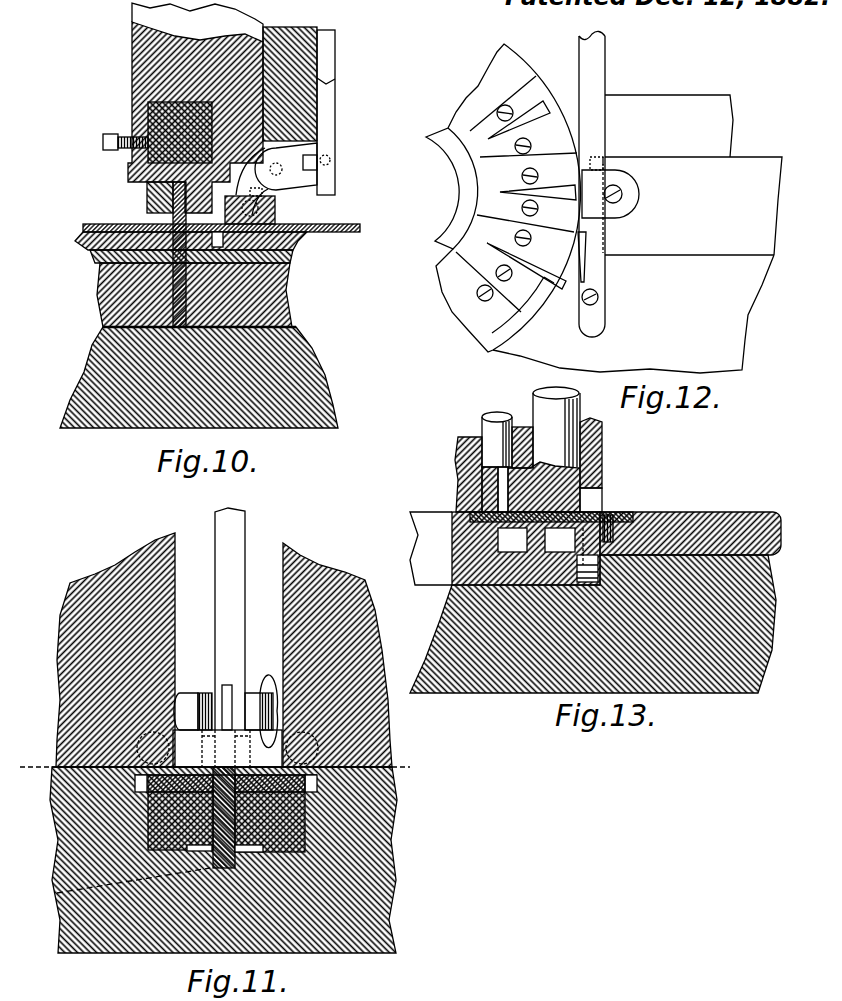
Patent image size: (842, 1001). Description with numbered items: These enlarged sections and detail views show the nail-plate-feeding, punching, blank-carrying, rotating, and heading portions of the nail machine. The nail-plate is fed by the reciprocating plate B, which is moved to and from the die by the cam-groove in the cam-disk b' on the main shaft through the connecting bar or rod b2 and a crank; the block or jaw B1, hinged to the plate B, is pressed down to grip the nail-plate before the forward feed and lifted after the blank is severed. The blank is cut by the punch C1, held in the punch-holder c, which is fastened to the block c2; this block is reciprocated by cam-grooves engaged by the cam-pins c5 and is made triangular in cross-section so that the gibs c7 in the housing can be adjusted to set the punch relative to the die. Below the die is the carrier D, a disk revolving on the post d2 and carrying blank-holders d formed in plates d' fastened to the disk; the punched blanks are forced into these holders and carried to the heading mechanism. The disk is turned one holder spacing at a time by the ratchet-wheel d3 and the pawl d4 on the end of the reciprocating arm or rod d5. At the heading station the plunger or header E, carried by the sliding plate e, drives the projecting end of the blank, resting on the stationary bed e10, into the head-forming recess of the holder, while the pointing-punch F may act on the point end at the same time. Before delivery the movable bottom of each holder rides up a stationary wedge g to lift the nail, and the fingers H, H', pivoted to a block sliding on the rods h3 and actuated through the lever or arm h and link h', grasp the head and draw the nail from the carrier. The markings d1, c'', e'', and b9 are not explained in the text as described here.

In FIG. 10, the block c2 is at (180, 132).
In FIG. 10, the punch-holder c is at (160, 197).
In FIG. 10, the cam-disk b' is at (290, 84).
In FIG. 11, the cam-disk b' is at (258, 701).
In FIG. 10, the connecting bar or rod b2 is at (336, 101).
In FIG. 10, the block or jaw B1 is at (262, 210).
In FIG. 10, the plate B is at (299, 246).
In FIG. 10, the carrier D is at (194, 295).
In FIG. 11, the carrier D is at (180, 821).
In FIG. 10, the post d2 is at (188, 296).
In FIG. 11, the post d2 is at (270, 822).
In FIG. 10, the punch C1 is at (134, 222).
In FIG. 10, the pin d1 is at (133, 228).
In FIG. 10, the clamp foot c'' is at (154, 222).
In FIG. 12, the ratchet-wheel d3 is at (533, 69).
In FIG. 12, the blank-holders d is at (531, 190).
In FIG. 12, the plates d' is at (516, 214).
In FIG. 12, the plunger or header E is at (606, 205).
In FIG. 13, the plunger or header E is at (608, 505).
In FIG. 12, the sliding plate e is at (637, 234).
In FIG. 13, the sliding plate e is at (690, 520).
In FIG. 12, the pawl d4 is at (600, 283).
In FIG. 12, the arm or rod d5 is at (602, 310).
In FIG. 13, the strip e'' is at (553, 494).
In FIG. 13, the bed e10 is at (587, 555).
In FIG. 13, the pointing-punch F is at (454, 493).
In FIG. 13, the cam-pins c5 is at (544, 487).
In FIG. 13, the gibs c7 is at (556, 427).
In FIG. 11, the lever or arm h is at (230, 619).
In FIG. 11, the key b9 is at (213, 697).
In FIG. 11, the link h' is at (227, 748).
In FIG. 11, the rods h3 is at (150, 735).
In FIG. 11, the finger H is at (205, 768).
In FIG. 11, the finger H' is at (408, 768).
In FIG. 11, the wedge g is at (123, 888).